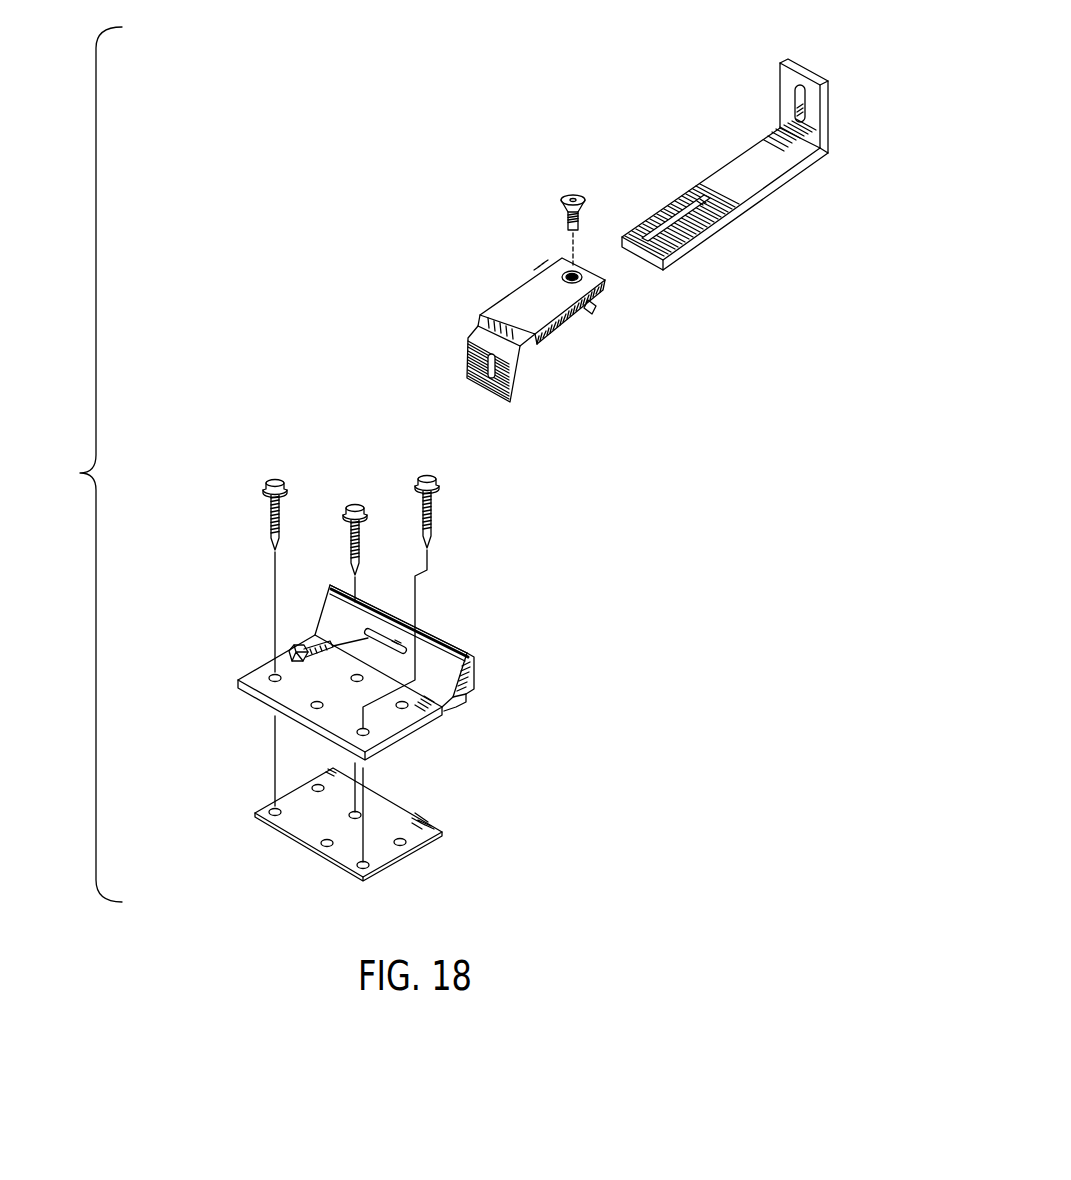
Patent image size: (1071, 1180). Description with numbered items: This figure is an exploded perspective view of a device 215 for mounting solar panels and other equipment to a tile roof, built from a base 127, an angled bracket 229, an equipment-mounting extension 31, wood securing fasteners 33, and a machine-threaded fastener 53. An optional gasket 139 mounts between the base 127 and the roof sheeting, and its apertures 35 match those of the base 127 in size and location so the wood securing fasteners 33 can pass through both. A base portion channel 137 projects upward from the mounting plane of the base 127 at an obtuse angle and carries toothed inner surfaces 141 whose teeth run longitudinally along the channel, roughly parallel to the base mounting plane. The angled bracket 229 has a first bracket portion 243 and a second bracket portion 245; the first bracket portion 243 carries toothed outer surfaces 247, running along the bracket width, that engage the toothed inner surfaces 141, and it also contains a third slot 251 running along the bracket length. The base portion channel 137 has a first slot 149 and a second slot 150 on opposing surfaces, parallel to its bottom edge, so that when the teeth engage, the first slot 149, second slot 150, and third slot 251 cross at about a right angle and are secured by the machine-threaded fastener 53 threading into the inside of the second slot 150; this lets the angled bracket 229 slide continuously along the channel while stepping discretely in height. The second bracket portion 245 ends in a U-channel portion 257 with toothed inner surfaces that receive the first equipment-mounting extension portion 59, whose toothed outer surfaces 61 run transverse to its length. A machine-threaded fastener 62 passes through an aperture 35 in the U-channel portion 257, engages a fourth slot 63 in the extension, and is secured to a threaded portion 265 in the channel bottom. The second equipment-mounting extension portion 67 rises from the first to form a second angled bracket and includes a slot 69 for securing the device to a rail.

The device 215 is at (78, 464).
The equipment-mounting extension 31 is at (676, 116).
The second equipment-mounting extension portion 67 is at (796, 62).
The slot 69 is at (800, 100).
The first equipment-mounting extension portion 59 is at (727, 164).
The toothed outer surfaces 61 is at (650, 215).
The fourth slot 63 is at (680, 212).
The machine-threaded fastener 62 is at (568, 194).
The angled bracket 229 is at (527, 253).
The second bracket portion 245 is at (503, 297).
The first bracket portion 243 is at (480, 323).
The toothed outer surfaces 247 is at (473, 343).
The third slot 251 is at (484, 380).
The U-channel portion 257 is at (600, 292).
The threaded portion 265 is at (590, 312).
The apertures 35 is at (578, 272).
The wood securing fasteners 33 is at (272, 477).
The base portion channel 137 is at (426, 606).
The base 127 is at (234, 692).
The toothed inner surfaces 141 is at (474, 658).
The second slot 150 is at (476, 684).
The first slot 149 is at (369, 633).
The machine-threaded fastener 53 is at (298, 667).
The gasket 139 is at (440, 825).